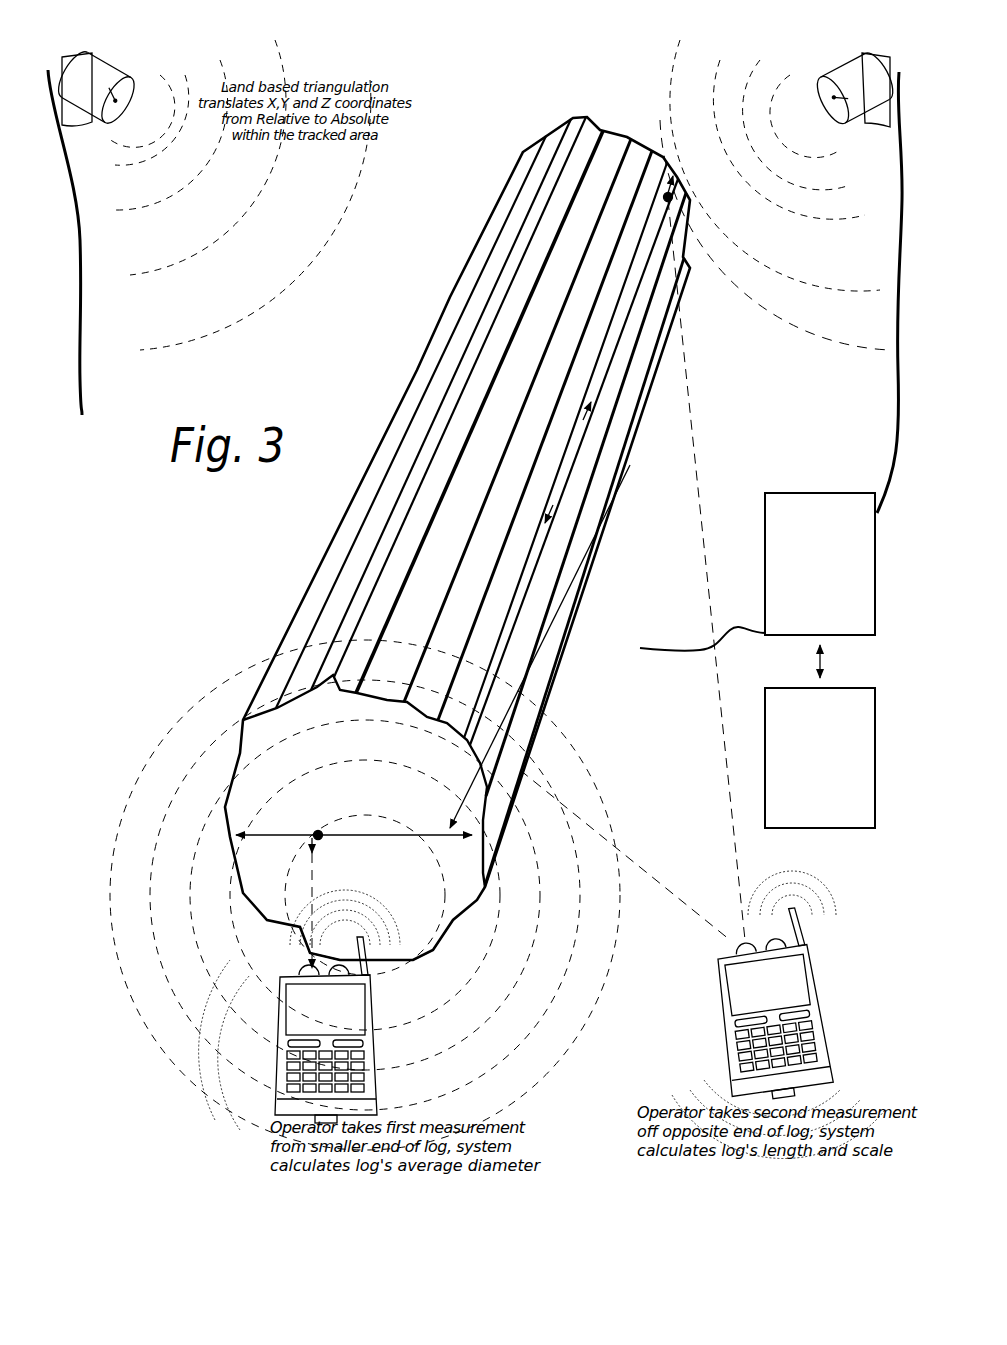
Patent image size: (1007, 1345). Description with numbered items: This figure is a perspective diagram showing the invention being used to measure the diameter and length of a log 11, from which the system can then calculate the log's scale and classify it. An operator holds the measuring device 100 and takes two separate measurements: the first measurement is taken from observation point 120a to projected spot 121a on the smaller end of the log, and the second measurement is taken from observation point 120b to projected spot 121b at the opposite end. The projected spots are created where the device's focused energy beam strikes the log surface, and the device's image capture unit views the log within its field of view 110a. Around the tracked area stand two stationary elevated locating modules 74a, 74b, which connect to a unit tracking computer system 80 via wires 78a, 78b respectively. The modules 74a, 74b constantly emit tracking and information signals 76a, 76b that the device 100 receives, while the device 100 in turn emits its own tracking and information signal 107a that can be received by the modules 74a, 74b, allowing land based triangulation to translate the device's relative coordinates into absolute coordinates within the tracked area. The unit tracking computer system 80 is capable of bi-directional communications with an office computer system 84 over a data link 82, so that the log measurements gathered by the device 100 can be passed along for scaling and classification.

The log 11 is at (340, 516).
The stationary elevated locating module 74a is at (862, 70).
The stationary elevated locating module 74b is at (93, 64).
The tracking and information signal 76a is at (830, 192).
The tracking and information signal 76b is at (105, 150).
The wire 78a is at (893, 370).
The wire 78b is at (82, 412).
The unit tracking computer system 80 is at (862, 508).
The data link 82 is at (822, 672).
The office computer system 84 is at (853, 797).
The device 100 is at (266, 1103).
The tracking and information signal 107a is at (405, 890).
The field of view 110a is at (625, 900).
The observation point 120a is at (300, 980).
The observation point 120b is at (715, 1002).
The projected spot 121a is at (318, 835).
The projected spot 121b is at (668, 199).